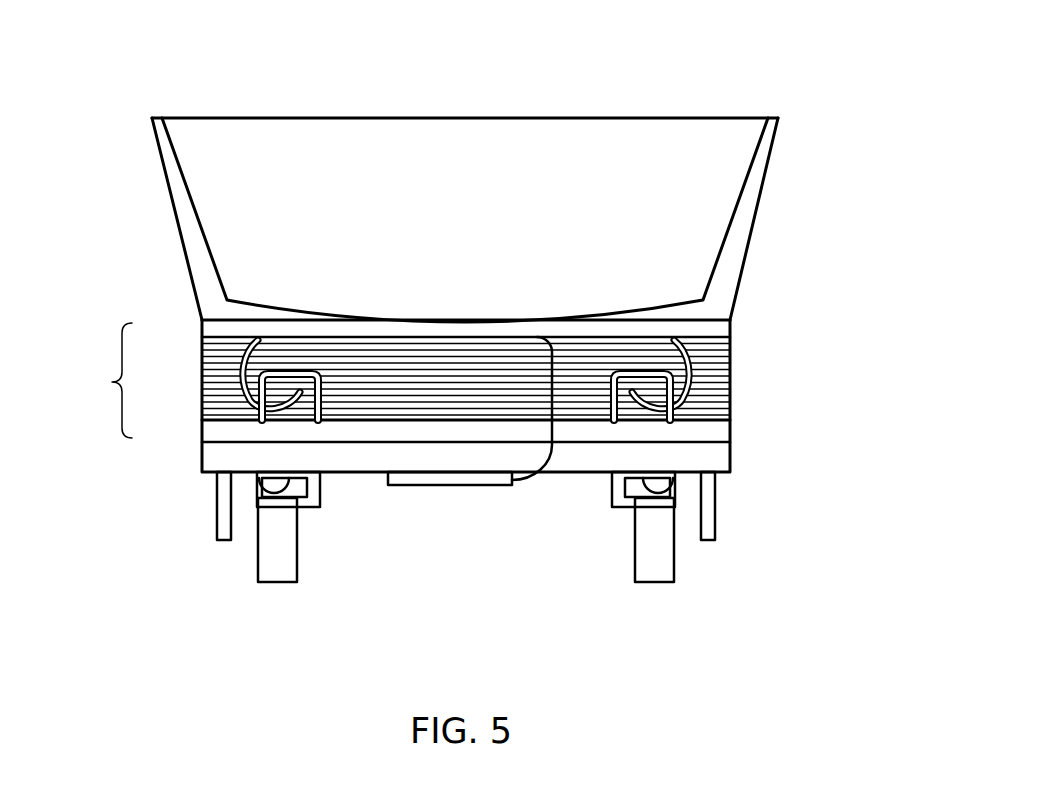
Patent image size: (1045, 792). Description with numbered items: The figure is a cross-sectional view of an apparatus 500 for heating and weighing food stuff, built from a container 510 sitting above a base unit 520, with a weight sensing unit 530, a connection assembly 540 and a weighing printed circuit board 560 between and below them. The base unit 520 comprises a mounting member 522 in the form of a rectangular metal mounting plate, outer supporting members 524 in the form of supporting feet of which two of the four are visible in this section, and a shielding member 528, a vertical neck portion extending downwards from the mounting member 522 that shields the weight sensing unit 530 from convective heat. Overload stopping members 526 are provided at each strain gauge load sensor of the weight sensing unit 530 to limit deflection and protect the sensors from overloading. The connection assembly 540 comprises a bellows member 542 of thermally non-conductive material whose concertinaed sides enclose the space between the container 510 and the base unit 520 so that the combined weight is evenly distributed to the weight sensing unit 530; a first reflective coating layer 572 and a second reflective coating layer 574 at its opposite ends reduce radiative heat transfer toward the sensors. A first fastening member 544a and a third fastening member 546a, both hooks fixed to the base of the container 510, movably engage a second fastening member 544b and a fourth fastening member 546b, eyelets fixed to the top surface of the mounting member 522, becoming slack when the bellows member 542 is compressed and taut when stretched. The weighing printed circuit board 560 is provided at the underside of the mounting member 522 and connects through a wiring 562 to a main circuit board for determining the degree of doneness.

The apparatus 500 is at (688, 91).
The container 510 is at (175, 180).
The base unit 520 is at (363, 486).
The mounting member 522 is at (730, 457).
The outer supporting members 524 is at (256, 550).
The overload stopping members 526 is at (672, 485).
The shielding member 528 is at (216, 508).
The weight sensing unit 530 is at (287, 500).
The connection assembly 540 is at (93, 380).
The bellows member 542 is at (730, 380).
The first fastening member 544a is at (693, 375).
The second fastening member 544b is at (642, 378).
The third fastening member 546a is at (235, 372).
The fourth fastening member 546b is at (258, 412).
The weighing printed circuit board 560 is at (460, 487).
The wiring 562 is at (522, 480).
The first reflective coating layer 572 is at (222, 332).
The second reflective coating layer 574 is at (203, 432).